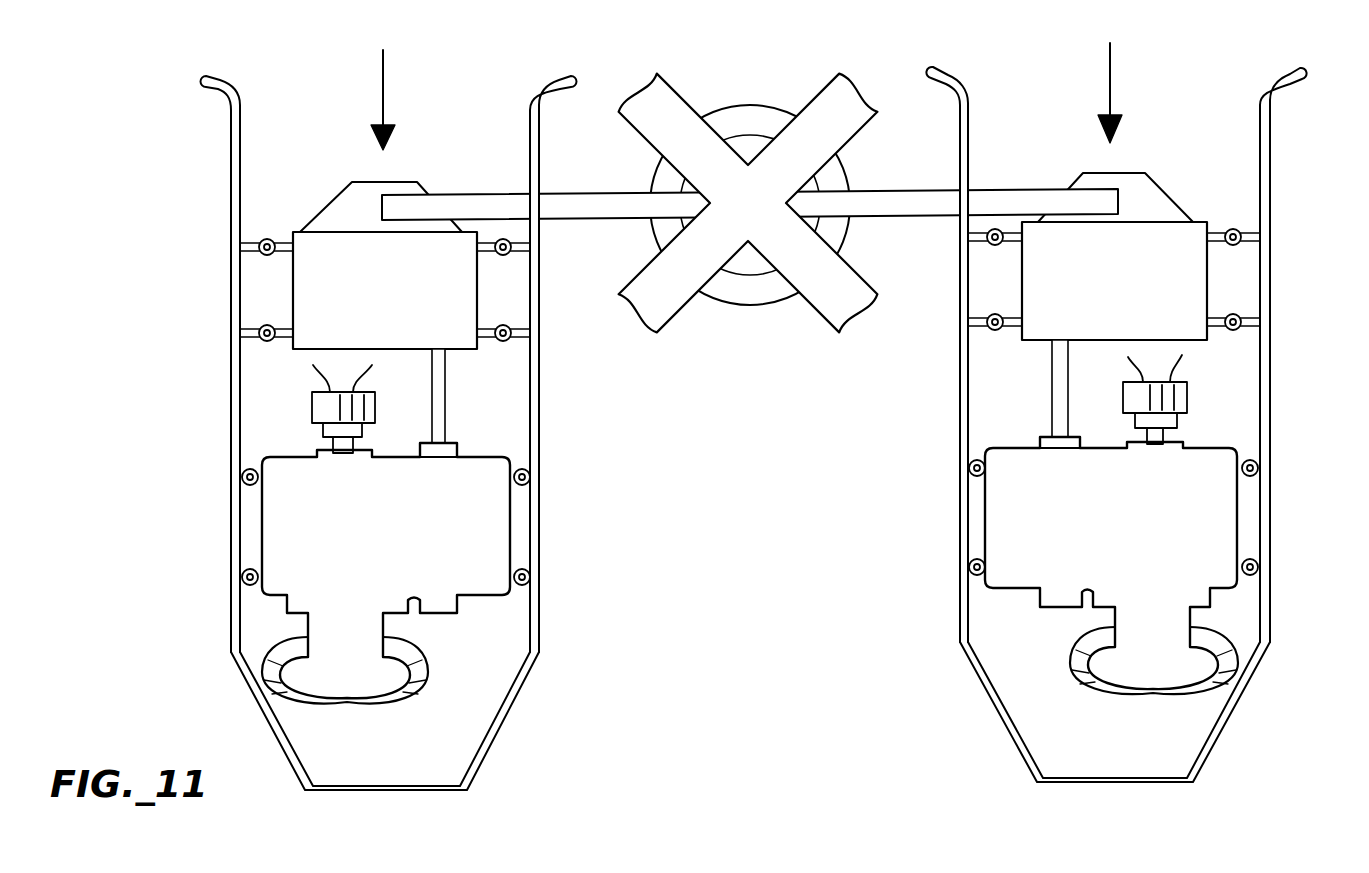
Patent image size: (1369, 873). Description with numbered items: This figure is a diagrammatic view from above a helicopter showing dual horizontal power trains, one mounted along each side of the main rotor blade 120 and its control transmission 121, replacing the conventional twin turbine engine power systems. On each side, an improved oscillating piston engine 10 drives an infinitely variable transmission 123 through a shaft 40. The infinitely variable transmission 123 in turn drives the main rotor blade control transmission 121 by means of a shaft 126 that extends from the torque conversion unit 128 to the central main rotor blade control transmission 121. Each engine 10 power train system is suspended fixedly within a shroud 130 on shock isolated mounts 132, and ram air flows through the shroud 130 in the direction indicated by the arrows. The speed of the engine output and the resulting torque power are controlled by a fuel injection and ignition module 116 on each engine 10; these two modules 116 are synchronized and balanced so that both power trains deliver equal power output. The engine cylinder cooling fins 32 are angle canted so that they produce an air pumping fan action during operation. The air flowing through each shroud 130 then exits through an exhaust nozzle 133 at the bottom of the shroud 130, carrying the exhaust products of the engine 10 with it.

The oscillating piston engine 10 is at (500, 540).
The engine cylinder cooling fins 32 is at (285, 705).
The shaft 40 is at (442, 418).
The fuel injection and ignition module 116 is at (320, 410).
The main rotor blade 120 is at (840, 92).
The main rotor blade control transmission 121 is at (787, 112).
The infinitely variable transmission 123 is at (300, 318).
The shaft 126 is at (635, 203).
The torque conversion unit 128 is at (345, 215).
The shroud 130 is at (540, 120).
The shock isolated mounts 132 is at (510, 253).
The exhaust nozzle 133 is at (378, 791).